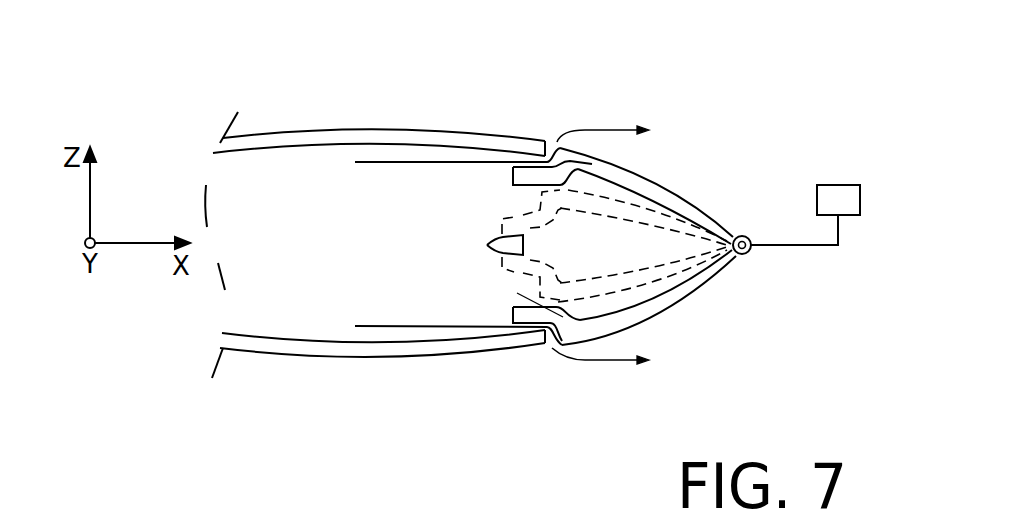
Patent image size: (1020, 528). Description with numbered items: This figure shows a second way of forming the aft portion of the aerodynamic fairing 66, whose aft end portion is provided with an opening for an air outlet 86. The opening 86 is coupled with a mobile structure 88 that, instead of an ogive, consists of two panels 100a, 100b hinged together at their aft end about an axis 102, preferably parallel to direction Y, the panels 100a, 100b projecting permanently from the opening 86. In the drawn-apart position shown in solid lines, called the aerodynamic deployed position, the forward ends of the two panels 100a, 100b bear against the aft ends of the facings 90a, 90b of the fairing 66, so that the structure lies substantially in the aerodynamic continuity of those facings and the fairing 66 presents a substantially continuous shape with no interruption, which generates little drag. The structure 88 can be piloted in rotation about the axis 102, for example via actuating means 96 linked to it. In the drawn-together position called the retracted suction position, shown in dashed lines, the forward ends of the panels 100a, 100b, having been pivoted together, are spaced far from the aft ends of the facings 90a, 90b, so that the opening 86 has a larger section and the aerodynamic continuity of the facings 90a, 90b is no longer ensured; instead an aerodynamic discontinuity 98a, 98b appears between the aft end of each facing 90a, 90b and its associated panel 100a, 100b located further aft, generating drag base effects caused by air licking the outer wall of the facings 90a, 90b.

The aerodynamic fairing 66 is at (304, 126).
The facing 90a is at (417, 128).
The facing 90b is at (367, 358).
The aerodynamic discontinuity 98a is at (555, 147).
The aerodynamic discontinuity 98b is at (552, 348).
The panel 100a is at (648, 172).
The panel 100b is at (662, 320).
The mobile structure 88 is at (712, 205).
The opening for an air outlet 86 is at (652, 296).
The actuating means 96 is at (840, 183).
The axis 102 is at (748, 253).